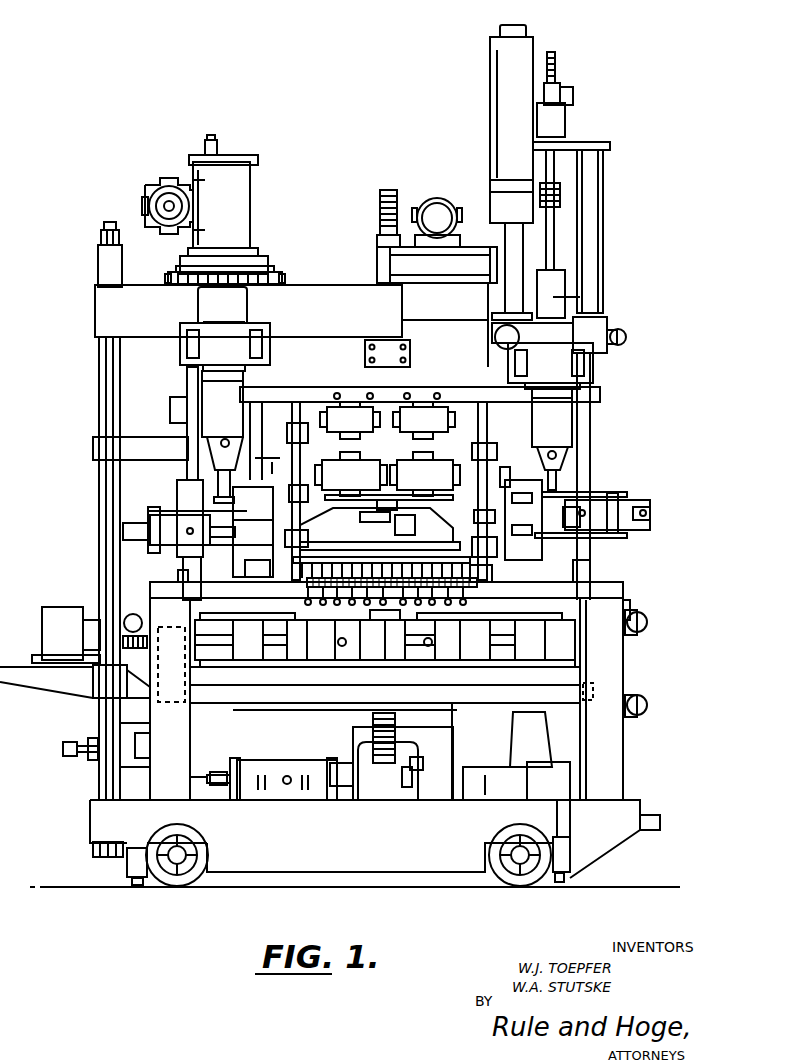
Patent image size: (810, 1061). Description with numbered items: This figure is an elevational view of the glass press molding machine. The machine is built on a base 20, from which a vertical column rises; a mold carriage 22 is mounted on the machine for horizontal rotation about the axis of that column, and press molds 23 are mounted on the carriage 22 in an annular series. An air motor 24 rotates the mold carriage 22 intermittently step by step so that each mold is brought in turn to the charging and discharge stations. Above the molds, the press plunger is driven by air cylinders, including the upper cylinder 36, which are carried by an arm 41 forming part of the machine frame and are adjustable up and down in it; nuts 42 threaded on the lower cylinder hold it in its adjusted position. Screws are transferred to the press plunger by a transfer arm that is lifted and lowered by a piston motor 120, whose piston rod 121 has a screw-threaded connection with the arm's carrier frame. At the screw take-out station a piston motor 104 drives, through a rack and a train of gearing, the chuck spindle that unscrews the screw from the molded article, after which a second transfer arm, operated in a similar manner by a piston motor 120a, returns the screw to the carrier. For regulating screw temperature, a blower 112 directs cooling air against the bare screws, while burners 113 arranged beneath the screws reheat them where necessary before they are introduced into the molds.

The base 20 is at (415, 878).
The mold carriage 22 is at (570, 677).
The press molds 23 is at (563, 620).
The air motor 24 is at (297, 738).
The upper cylinder 36 is at (243, 202).
The arm 41 is at (101, 312).
The nuts 42 is at (280, 270).
The piston motor 104 is at (495, 100).
The blower 112 is at (448, 613).
The burners 113 is at (323, 615).
The piston motor 120 is at (215, 408).
The piston motor 120a is at (570, 427).
The piston rod 121 is at (220, 470).